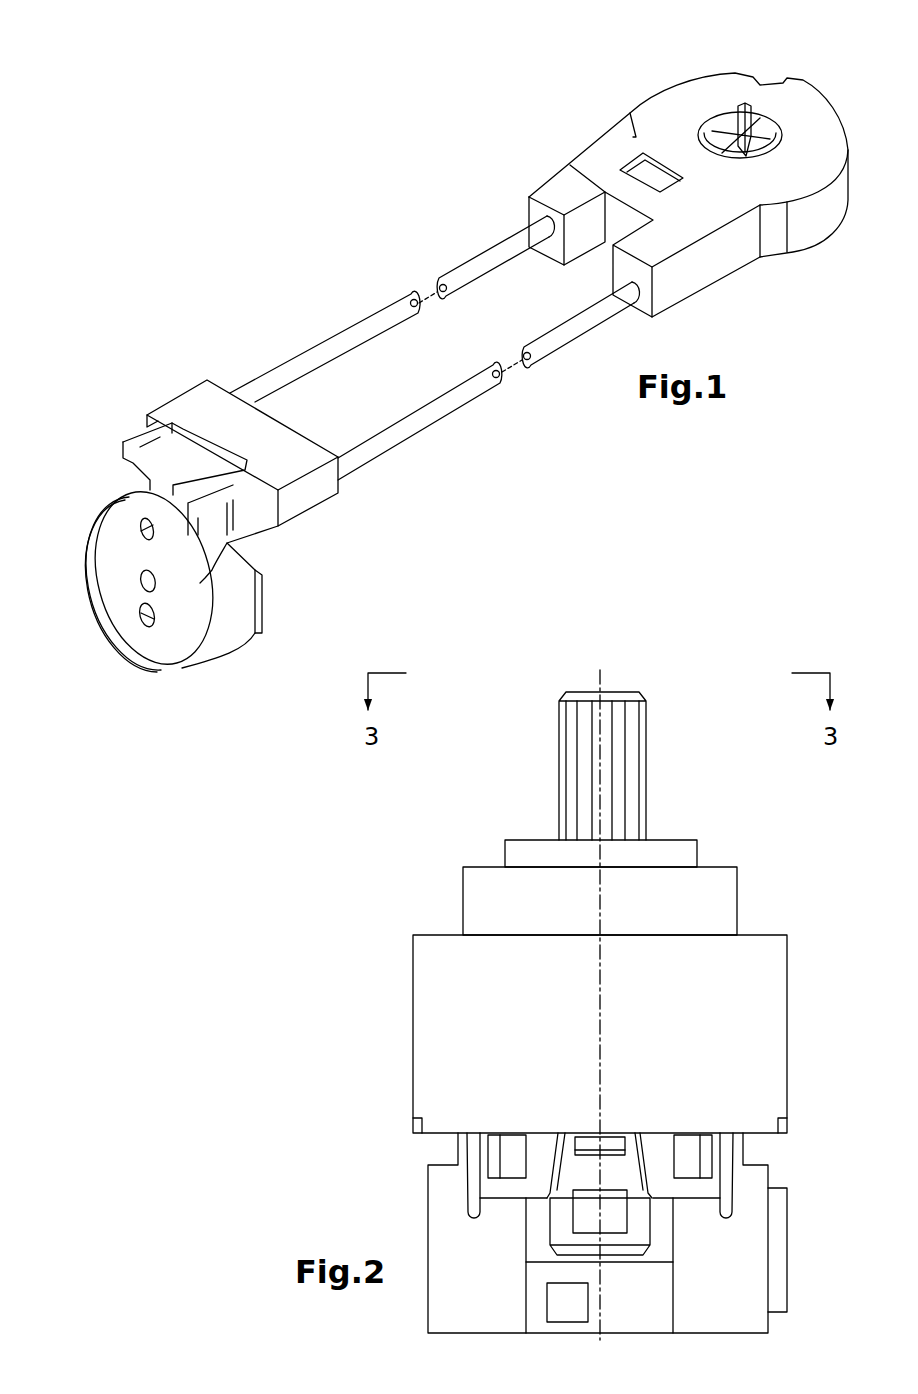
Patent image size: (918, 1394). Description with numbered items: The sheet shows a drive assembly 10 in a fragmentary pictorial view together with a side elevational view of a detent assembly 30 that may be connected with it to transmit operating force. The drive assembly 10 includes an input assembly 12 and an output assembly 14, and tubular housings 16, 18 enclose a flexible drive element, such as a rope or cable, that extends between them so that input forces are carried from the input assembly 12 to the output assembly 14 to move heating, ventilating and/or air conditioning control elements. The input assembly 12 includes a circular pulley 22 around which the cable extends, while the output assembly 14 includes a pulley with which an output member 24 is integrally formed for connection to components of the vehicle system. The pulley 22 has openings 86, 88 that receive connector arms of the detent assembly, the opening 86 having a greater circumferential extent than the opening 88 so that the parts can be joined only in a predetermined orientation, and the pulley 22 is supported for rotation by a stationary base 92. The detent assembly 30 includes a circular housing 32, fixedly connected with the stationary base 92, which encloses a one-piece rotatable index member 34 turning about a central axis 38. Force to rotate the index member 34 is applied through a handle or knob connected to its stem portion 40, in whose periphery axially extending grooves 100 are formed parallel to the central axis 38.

In FIG. 1, the drive assembly 10 is at (402, 174).
In FIG. 1, the input assembly 12 is at (148, 392).
In FIG. 1, the output assembly 14 is at (706, 72).
In FIG. 1, the tubular housing 16 is at (380, 320).
In FIG. 1, the tubular housing 18 is at (548, 347).
In FIG. 1, the circular pulley 22 is at (118, 600).
In FIG. 1, the output member 24 is at (747, 101).
In FIG. 1, the opening 86 is at (147, 624).
In FIG. 1, the opening 88 is at (140, 524).
In FIG. 1, the stationary base 92 is at (226, 629).
In FIG. 2, the detent assembly 30 is at (695, 740).
In FIG. 2, the circular housing 32 is at (742, 908).
In FIG. 2, the index member 34 is at (555, 775).
In FIG. 2, the central axis 38 is at (600, 680).
In FIG. 2, the stem portion 40 is at (633, 728).
In FIG. 2, the grooves 100 is at (611, 792).